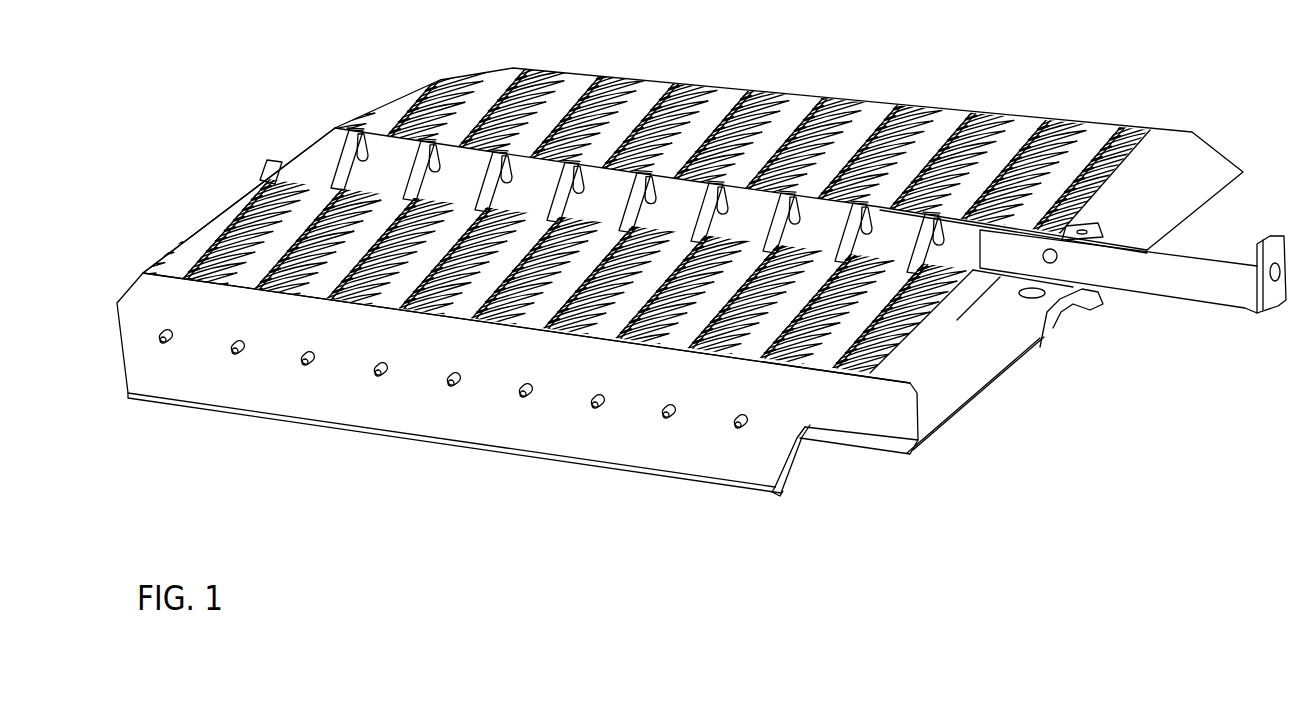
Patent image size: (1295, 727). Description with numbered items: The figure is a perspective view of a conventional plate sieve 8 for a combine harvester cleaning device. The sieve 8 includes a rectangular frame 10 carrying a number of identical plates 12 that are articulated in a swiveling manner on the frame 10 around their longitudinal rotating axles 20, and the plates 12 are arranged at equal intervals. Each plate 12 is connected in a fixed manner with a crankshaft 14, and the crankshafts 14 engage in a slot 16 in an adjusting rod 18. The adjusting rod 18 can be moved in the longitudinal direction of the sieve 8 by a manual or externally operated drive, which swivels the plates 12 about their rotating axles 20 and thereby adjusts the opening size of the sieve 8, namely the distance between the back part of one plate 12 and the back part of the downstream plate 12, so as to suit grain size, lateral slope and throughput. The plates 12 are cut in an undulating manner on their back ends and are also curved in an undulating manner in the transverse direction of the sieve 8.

The sieve 8 is at (932, 484).
The rectangular frame 10 is at (693, 440).
The plates 12 is at (913, 337).
The crankshafts 14 is at (937, 218).
The slot 16 is at (938, 243).
The adjusting rod 18 is at (1128, 273).
The rotating axles 20 is at (382, 378).